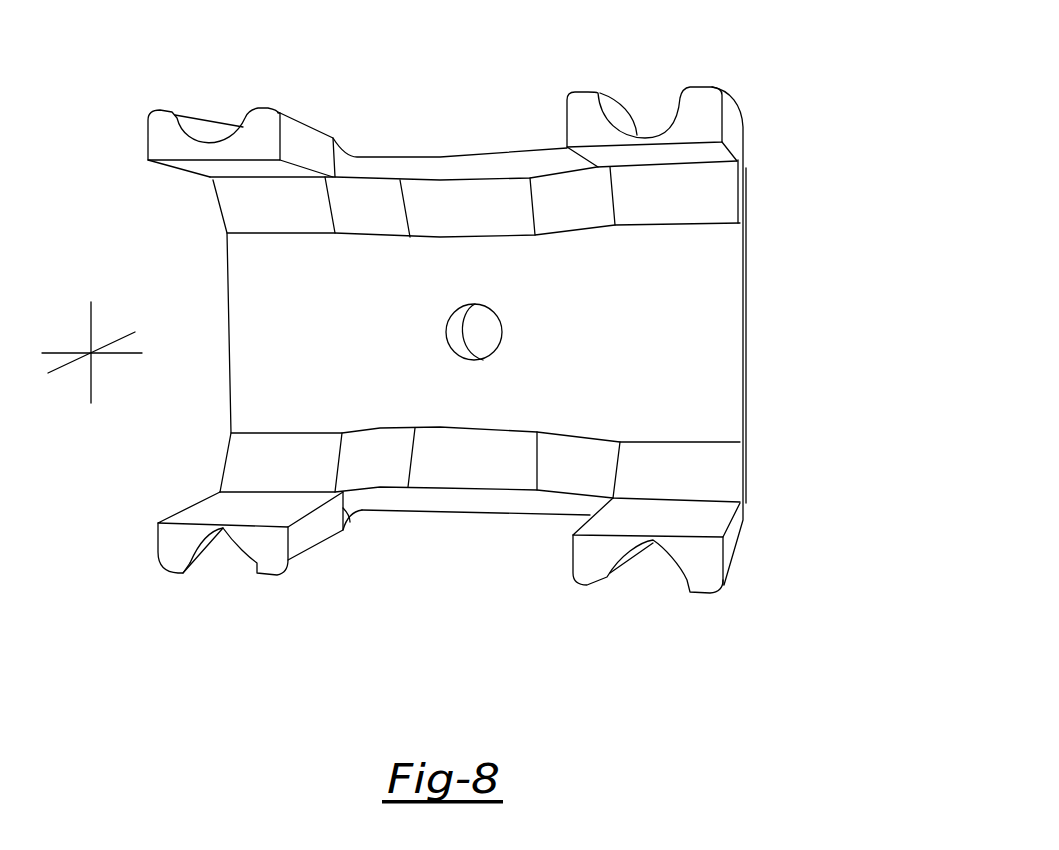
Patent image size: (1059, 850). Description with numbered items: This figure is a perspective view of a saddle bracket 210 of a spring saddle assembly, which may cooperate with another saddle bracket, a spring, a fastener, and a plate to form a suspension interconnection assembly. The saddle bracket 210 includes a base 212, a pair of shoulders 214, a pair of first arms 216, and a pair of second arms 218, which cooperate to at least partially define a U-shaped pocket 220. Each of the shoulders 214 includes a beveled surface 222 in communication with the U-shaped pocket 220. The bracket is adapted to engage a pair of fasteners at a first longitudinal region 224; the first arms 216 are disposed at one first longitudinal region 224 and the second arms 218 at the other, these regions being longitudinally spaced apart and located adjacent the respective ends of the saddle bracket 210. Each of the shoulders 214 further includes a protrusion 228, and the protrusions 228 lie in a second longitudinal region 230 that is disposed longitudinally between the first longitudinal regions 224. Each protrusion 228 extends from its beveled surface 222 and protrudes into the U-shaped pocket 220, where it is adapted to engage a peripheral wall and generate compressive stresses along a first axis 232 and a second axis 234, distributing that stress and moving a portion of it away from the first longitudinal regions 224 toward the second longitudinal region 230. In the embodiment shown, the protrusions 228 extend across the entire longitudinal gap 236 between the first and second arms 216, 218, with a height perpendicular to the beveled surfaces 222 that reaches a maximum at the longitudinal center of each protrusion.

The saddle bracket 210 is at (797, 70).
The base 212 is at (700, 278).
The shoulders 214 is at (718, 172).
The first arms 216 is at (698, 110).
The second arms 218 is at (263, 130).
The U-shaped pocket 220 is at (334, 269).
The beveled surface 222 is at (688, 211).
The first longitudinal region 224 is at (217, 595).
The protrusion 228 is at (482, 213).
The second longitudinal region 230 is at (431, 556).
The first axis 232 is at (60, 372).
The second axis 234 is at (90, 320).
The longitudinal gap 236 is at (489, 150).